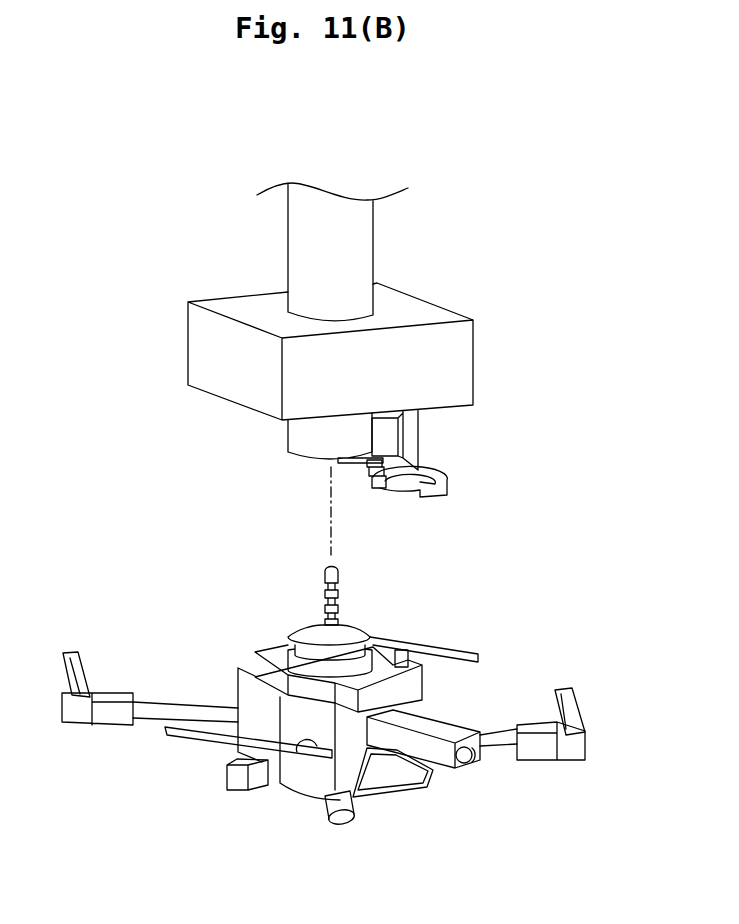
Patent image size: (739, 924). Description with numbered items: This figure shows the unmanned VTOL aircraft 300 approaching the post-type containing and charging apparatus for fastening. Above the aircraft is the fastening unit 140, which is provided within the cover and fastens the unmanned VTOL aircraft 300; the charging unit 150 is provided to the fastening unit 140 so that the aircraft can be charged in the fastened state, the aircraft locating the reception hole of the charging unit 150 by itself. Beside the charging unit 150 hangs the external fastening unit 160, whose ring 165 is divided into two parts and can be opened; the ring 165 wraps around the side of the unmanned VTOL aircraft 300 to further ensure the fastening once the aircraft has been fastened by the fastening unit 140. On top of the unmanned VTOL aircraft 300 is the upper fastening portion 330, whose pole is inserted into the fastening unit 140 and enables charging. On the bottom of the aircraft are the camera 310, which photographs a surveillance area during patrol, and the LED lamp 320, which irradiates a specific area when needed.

The fastening unit 140 is at (465, 363).
The charging unit 150 is at (298, 440).
The external fastening unit 160 is at (412, 433).
The ring 165 is at (433, 488).
The unmanned VTOL aircraft 300 is at (304, 772).
The camera 310 is at (342, 823).
The LED lamp 320 is at (407, 770).
The upper fastening portion 330 is at (311, 633).